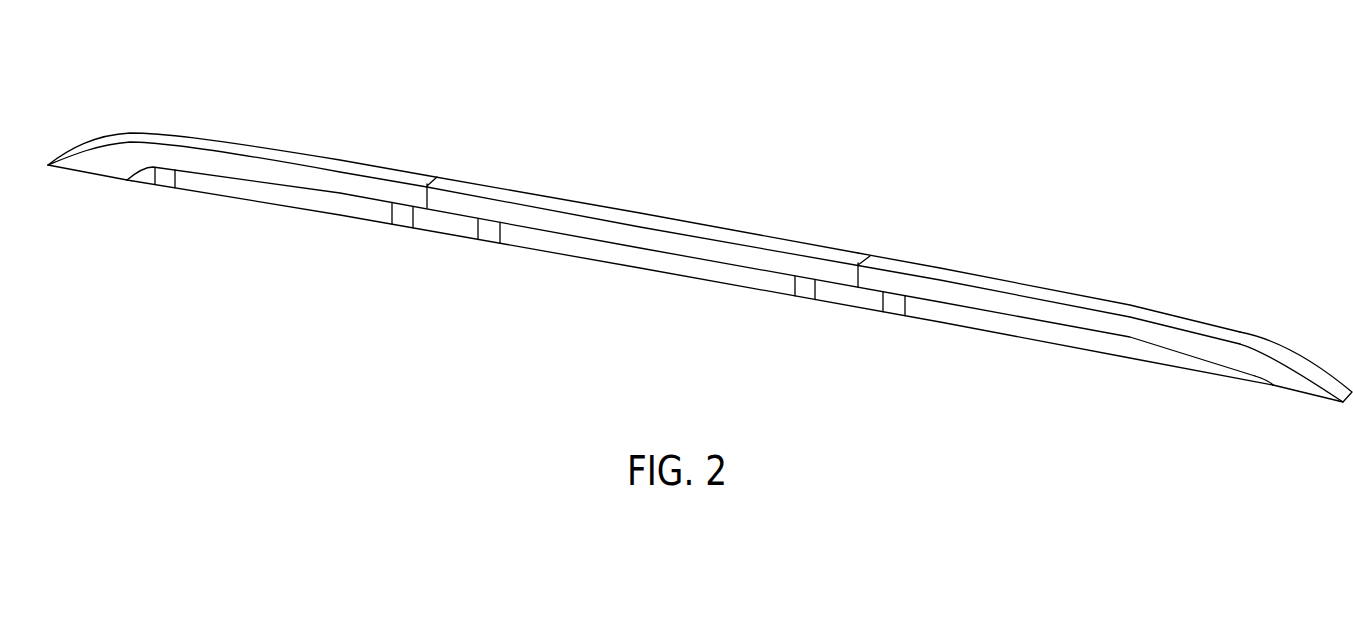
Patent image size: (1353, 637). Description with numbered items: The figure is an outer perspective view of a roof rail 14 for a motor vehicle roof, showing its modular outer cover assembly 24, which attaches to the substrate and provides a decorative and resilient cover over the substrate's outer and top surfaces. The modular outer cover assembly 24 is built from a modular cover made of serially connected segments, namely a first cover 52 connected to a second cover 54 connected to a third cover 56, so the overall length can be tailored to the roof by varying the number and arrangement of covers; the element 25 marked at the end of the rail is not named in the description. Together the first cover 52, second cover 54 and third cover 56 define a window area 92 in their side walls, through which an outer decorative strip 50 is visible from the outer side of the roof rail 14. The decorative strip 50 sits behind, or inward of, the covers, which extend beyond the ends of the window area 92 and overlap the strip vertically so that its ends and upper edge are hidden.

The roof rail 14 is at (1105, 232).
The modular outer cover assembly 24 is at (913, 262).
The end cap 25 is at (1282, 342).
The outer decorative strip 50 is at (632, 257).
The first cover 52 is at (1020, 290).
The second cover 54 is at (601, 212).
The third cover 56 is at (302, 155).
The window area 92 is at (1047, 323).